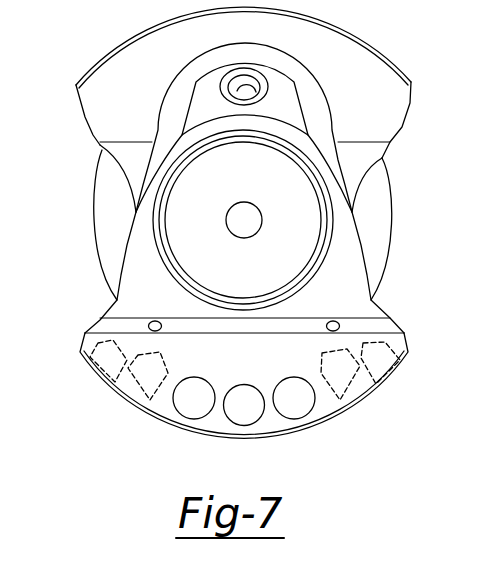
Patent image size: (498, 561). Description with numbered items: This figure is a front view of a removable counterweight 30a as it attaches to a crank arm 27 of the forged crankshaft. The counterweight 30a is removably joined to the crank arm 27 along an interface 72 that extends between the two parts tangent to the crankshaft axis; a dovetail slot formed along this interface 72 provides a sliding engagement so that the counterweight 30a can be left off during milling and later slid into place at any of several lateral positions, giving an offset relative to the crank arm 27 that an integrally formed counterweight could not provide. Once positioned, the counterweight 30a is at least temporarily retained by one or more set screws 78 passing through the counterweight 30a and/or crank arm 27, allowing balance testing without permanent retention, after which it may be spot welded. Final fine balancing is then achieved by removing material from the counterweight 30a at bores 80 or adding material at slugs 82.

The crank arm 27 is at (128, 302).
The interface 72 is at (85, 333).
The removable counterweight 30a is at (82, 366).
The set screws 78 is at (155, 320).
The bores 80 is at (140, 397).
The slugs 82 is at (195, 410).